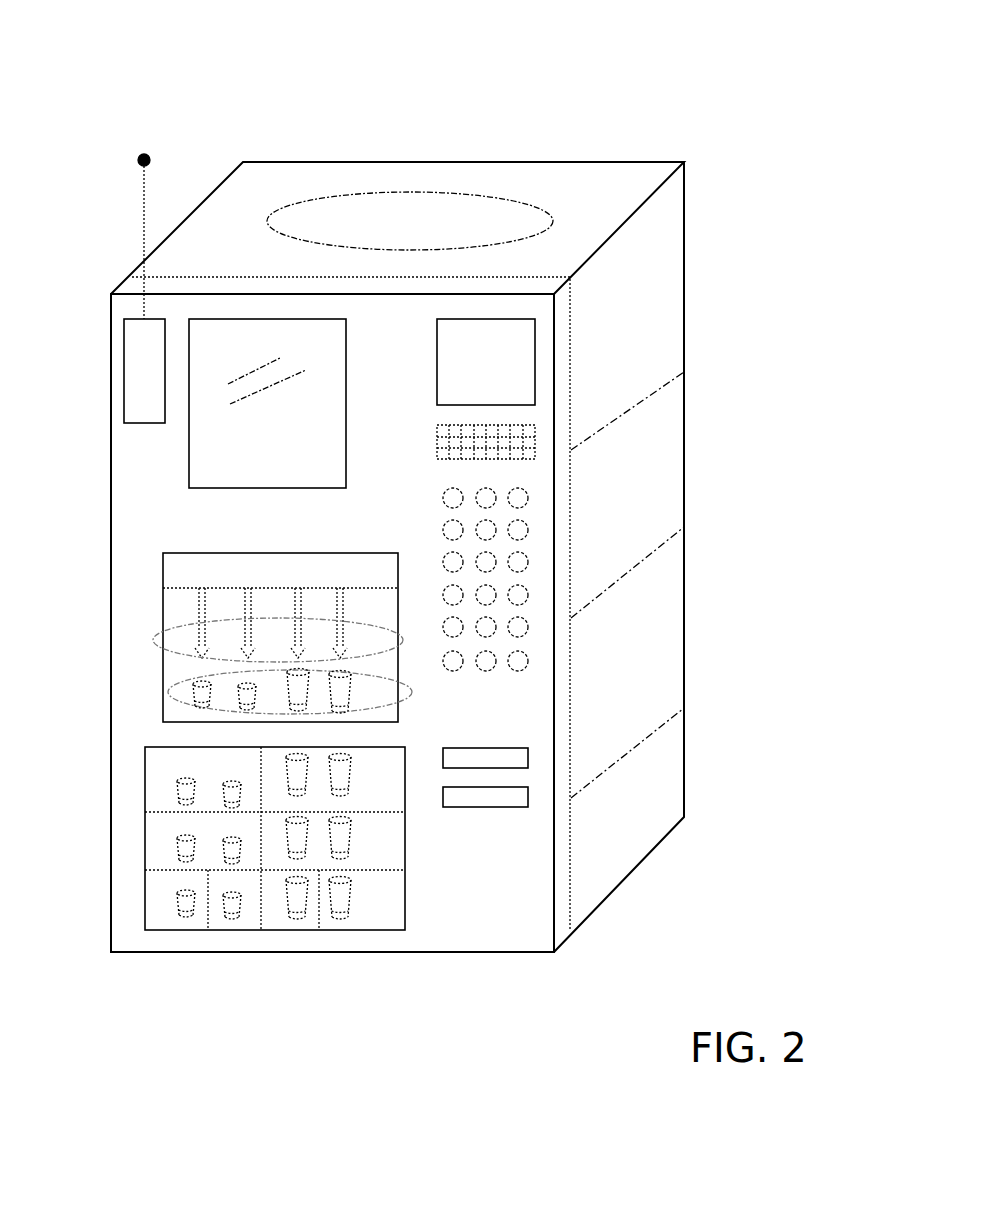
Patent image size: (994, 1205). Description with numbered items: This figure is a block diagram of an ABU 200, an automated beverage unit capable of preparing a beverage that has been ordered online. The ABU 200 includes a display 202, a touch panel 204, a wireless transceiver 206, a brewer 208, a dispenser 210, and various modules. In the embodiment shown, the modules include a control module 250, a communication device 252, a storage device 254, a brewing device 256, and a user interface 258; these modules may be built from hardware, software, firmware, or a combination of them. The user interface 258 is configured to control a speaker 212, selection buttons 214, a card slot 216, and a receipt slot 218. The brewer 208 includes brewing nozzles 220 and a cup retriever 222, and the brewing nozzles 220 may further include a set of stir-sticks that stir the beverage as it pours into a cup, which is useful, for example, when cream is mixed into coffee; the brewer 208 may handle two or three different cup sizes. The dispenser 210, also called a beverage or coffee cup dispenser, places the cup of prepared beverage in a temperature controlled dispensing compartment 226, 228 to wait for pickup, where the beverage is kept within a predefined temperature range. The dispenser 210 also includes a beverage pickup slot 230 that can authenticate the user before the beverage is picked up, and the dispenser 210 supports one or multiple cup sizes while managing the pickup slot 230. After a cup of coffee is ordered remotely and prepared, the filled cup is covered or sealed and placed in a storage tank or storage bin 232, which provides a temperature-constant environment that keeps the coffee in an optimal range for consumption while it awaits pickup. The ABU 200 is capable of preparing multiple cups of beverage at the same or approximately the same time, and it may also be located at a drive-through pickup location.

The ABU 200 is at (661, 80).
The display 202 is at (250, 470).
The touch panel 204 is at (468, 392).
The wireless transceiver 206 is at (137, 370).
The brewer 208 is at (226, 619).
The dispenser 210 is at (254, 851).
The speaker 212 is at (437, 442).
The selection buttons 214 is at (425, 522).
The card slot 216 is at (494, 746).
The receipt slot 218 is at (500, 808).
The brewing nozzles 220 is at (162, 632).
The cup retriever 222 is at (172, 697).
The temperature controlled dispensing compartment 226 is at (145, 772).
The temperature controlled dispensing compartment 228 is at (145, 836).
The beverage pickup slot 230 is at (223, 910).
The storage bin 232 is at (368, 908).
The control module 250 is at (384, 243).
The communication device 252 is at (622, 316).
The storage device 254 is at (631, 482).
The brewing device 256 is at (633, 656).
The user interface 258 is at (631, 808).